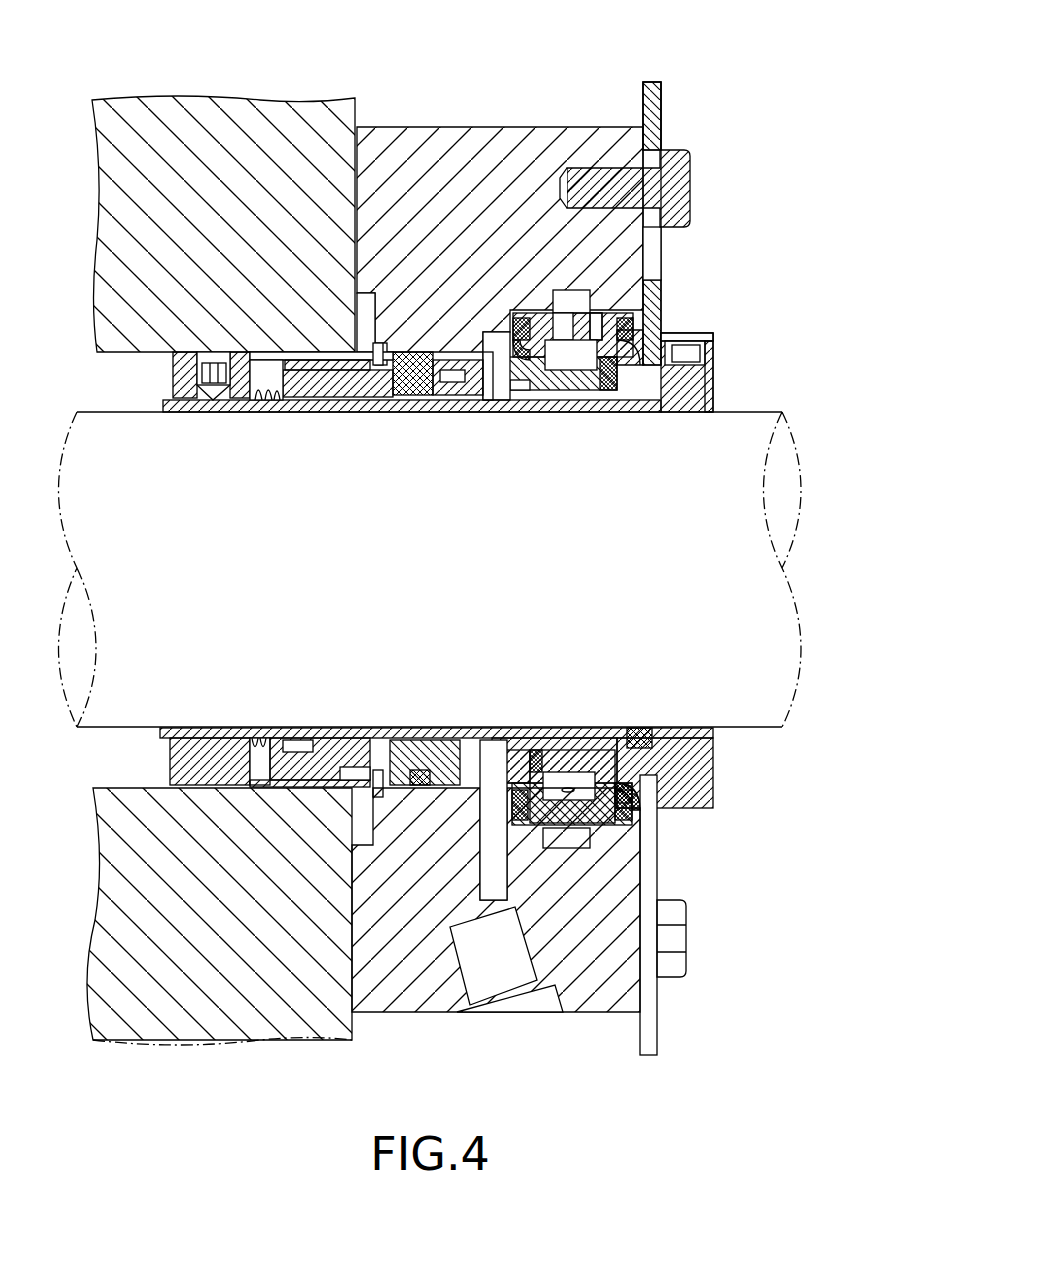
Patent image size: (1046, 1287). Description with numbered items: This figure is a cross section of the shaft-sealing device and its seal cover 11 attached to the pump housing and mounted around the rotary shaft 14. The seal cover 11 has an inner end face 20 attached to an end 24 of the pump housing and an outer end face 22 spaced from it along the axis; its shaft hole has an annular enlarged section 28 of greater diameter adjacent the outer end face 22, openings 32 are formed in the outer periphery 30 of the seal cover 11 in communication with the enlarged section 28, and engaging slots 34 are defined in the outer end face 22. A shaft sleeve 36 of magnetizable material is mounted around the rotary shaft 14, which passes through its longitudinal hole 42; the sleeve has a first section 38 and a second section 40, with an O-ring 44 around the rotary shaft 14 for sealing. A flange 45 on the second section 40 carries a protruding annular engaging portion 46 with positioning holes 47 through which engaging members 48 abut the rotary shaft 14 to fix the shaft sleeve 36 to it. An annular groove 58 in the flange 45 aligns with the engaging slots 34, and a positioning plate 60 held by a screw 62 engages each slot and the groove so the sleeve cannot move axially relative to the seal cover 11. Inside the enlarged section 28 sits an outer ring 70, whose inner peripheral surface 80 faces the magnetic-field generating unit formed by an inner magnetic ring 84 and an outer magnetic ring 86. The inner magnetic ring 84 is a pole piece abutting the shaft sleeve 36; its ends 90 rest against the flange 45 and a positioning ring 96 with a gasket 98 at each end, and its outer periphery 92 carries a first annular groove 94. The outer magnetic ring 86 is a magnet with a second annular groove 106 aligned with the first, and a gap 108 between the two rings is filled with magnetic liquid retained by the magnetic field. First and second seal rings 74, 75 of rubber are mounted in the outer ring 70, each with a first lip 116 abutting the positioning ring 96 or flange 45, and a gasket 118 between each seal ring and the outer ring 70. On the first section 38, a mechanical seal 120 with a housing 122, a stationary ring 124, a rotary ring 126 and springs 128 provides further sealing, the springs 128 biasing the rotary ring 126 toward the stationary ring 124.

The seal cover 11 is at (408, 148).
The rotary shaft 14 is at (790, 685).
The inner end face 20 is at (353, 183).
The outer end face 22 is at (642, 150).
The end 24 is at (357, 128).
The annular enlarged section 28 is at (493, 350).
The outer periphery 30 is at (432, 1013).
The openings 32 is at (555, 1000).
The engaging slots 34 is at (643, 250).
The shaft sleeve 36 is at (395, 412).
The first section 38 is at (167, 735).
The second section 40 is at (549, 735).
The longitudinal hole 42 is at (443, 735).
The O-ring 44 is at (640, 740).
The flange 45 is at (637, 365).
The annular engaging portion 46 is at (712, 393).
The positioning holes 47 is at (650, 373).
The engaging members 48 is at (690, 373).
The annular groove 58 is at (705, 345).
The positioning plate 60 is at (657, 122).
The screw 62 is at (683, 193).
The outer ring 70 is at (625, 815).
The first seal ring 74 is at (523, 347).
The second seal ring 75 is at (635, 812).
The inner peripheral surface 80 is at (537, 822).
The inner magnetic ring 84 is at (568, 378).
The outer magnetic ring 86 is at (597, 330).
The ends 90 is at (525, 770).
The outer periphery 92 is at (620, 365).
The first annular groove 94 is at (604, 375).
The positioning ring 96 is at (498, 758).
The gasket 98 is at (517, 765).
The second annular groove 106 is at (553, 350).
The gap 108 is at (516, 395).
The first lip 116 is at (657, 786).
The gasket 118 is at (640, 810).
The mechanical seal 120 is at (281, 700).
The housing 122 is at (242, 392).
The stationary ring 124 is at (398, 750).
The rotary ring 126 is at (330, 757).
The springs 128 is at (225, 748).